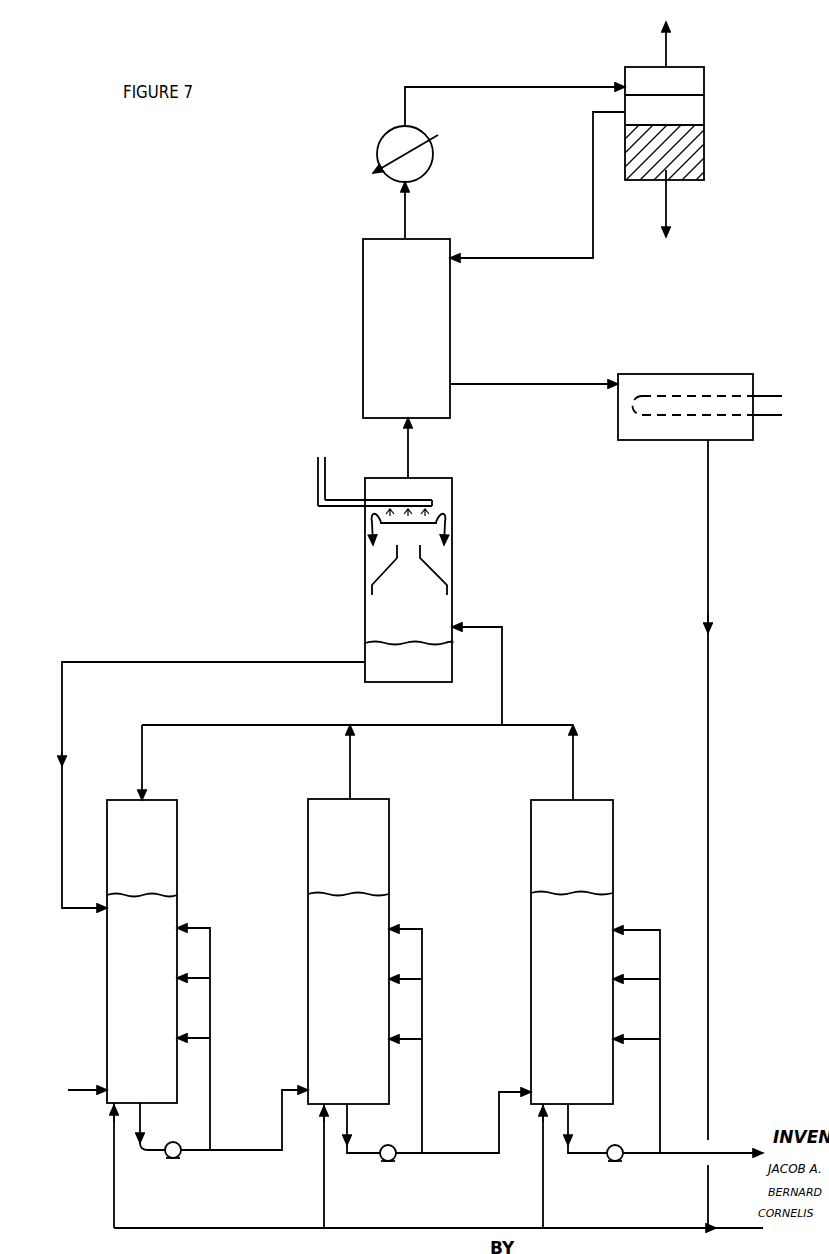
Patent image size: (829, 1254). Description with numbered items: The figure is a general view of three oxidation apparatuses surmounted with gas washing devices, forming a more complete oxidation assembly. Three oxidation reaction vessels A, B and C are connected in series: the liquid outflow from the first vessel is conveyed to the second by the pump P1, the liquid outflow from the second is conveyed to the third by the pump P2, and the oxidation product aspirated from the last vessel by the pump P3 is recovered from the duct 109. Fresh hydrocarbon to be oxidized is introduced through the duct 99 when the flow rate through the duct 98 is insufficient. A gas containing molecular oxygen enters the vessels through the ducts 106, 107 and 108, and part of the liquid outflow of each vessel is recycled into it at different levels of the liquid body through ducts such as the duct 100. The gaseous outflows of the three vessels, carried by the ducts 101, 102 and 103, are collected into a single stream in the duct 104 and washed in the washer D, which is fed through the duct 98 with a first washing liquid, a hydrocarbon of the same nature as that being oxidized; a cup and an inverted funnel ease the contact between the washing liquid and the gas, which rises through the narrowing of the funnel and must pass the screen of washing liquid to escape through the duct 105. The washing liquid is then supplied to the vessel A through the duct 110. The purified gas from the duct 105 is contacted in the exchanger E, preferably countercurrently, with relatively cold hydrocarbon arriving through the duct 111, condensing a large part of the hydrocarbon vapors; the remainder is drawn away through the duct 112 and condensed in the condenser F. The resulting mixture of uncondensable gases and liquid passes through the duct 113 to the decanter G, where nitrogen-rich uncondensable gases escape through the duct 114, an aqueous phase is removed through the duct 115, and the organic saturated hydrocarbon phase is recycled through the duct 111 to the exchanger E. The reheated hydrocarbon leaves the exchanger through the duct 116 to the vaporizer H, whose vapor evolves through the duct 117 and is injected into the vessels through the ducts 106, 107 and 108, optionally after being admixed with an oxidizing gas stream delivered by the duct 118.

The duct 98 is at (318, 503).
The duct 99 is at (68, 1088).
The duct 100 is at (215, 925).
The duct 101 is at (145, 772).
The duct 102 is at (352, 772).
The duct 103 is at (575, 775).
The duct 104 is at (505, 680).
The duct 105 is at (410, 455).
The duct 106 is at (114, 1157).
The duct 107 is at (324, 1187).
The duct 108 is at (541, 1187).
The duct 109 is at (722, 1150).
The duct 110 is at (150, 662).
The duct 111 is at (510, 258).
The duct 112 is at (408, 217).
The duct 113 is at (505, 87).
The duct 114 is at (670, 42).
The duct 115 is at (670, 218).
The duct 116 is at (530, 384).
The duct 117 is at (710, 727).
The duct 118 is at (726, 1222).
The oxidation reaction vessel A is at (100, 938).
The oxidation reaction vessel B is at (308, 930).
The oxidation reaction vessel C is at (531, 927).
The washer D is at (452, 610).
The exchanger E is at (450, 325).
The condenser F is at (433, 158).
The decanter G is at (704, 87).
The vaporizer H is at (705, 374).
The pump P1 is at (224, 1137).
The pump P2 is at (439, 1139).
The pump P3 is at (597, 1145).